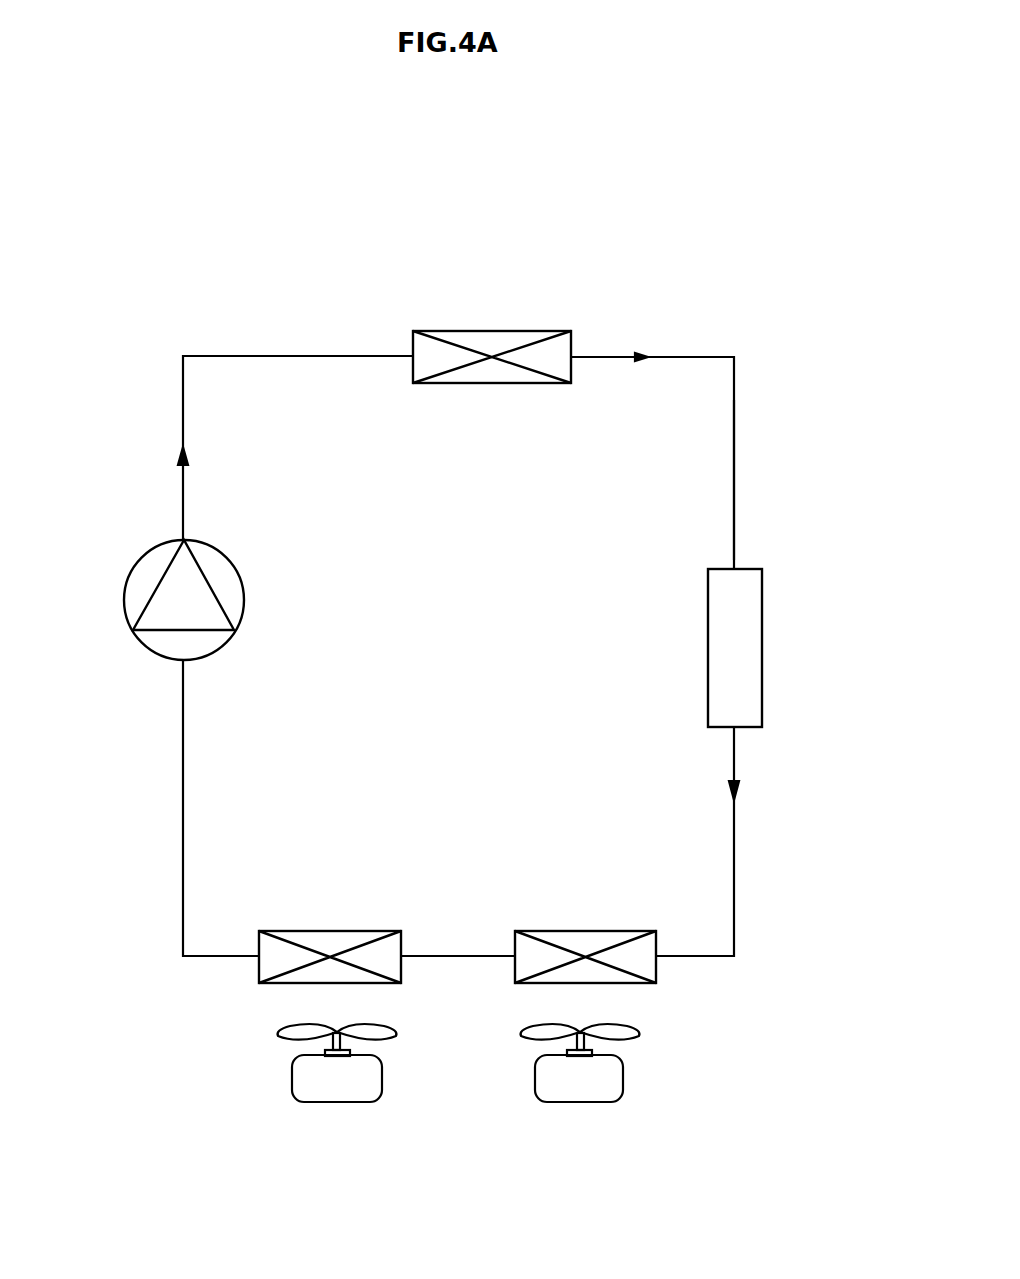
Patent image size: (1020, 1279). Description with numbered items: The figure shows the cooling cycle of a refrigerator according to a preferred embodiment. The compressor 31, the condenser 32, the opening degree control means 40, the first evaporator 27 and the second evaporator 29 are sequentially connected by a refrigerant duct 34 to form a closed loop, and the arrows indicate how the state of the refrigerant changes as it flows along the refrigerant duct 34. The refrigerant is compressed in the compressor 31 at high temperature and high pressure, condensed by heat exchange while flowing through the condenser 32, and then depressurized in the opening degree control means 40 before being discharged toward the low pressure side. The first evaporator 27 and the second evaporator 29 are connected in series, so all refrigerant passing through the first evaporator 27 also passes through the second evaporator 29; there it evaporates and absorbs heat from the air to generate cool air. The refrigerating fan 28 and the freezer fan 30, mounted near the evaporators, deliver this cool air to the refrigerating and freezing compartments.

The first evaporator 27 is at (578, 930).
The refrigerating fan 28 is at (624, 1078).
The second evaporator 29 is at (336, 930).
The freezer fan 30 is at (290, 1080).
The compressor 31 is at (141, 560).
The condenser 32 is at (545, 330).
The refrigerant duct 34 is at (736, 466).
The opening degree control means 40 is at (763, 676).